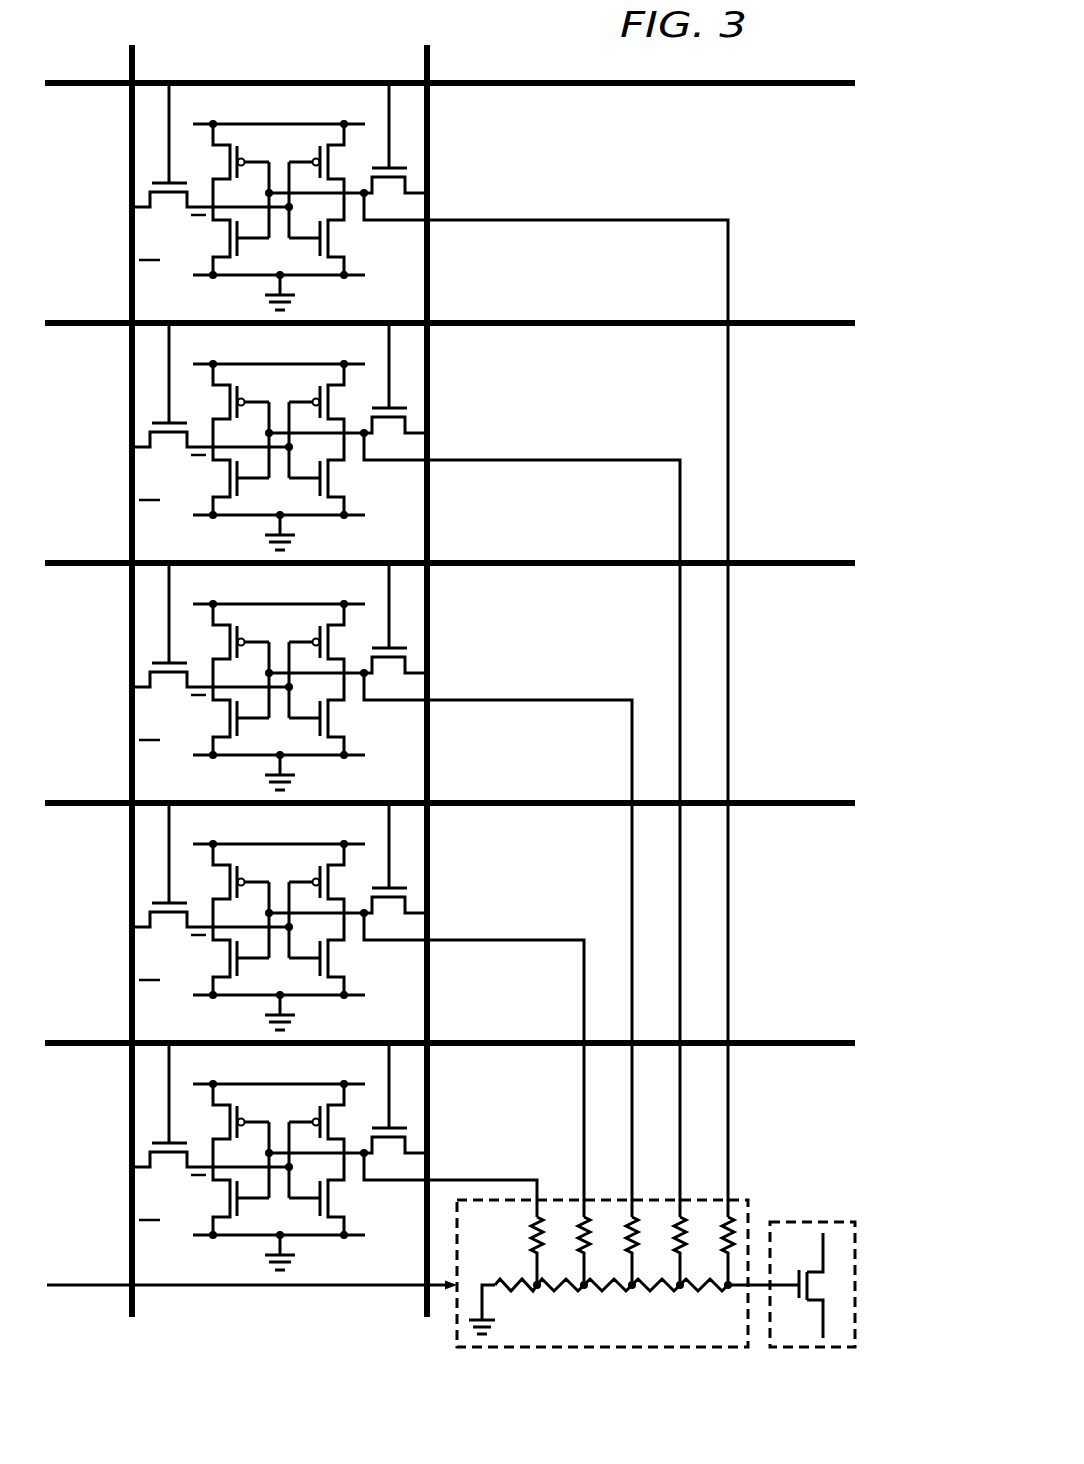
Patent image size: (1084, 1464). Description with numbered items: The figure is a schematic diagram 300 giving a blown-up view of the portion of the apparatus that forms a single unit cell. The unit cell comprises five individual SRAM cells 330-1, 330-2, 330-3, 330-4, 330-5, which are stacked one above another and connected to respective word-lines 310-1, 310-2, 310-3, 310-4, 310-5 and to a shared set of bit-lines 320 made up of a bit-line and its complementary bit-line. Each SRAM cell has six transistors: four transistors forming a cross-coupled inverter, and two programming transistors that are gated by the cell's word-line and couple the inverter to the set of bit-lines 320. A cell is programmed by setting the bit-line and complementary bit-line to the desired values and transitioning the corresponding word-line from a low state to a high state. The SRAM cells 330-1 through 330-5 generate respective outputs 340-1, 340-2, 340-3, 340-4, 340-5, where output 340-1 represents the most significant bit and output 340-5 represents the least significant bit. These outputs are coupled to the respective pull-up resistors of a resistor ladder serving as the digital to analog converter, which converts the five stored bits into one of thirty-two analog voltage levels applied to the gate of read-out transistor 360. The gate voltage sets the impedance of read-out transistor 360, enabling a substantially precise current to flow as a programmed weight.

The schematic diagram 300 is at (702, 71).
The word-line 310-1 is at (77, 88).
The word-line 310-2 is at (450, 336).
The word-line 310-3 is at (450, 576).
The word-line 310-4 is at (450, 816).
The word-line 310-5 is at (450, 1056).
The set of bit-lines 320 is at (445, 1337).
The SRAM cell 330-1 is at (128, 88).
The SRAM cell 330-2 is at (237, 440).
The SRAM cell 330-3 is at (237, 680).
The SRAM cell 330-4 is at (237, 920).
The SRAM cell 330-5 is at (237, 1160).
The output 340-1 is at (472, 216).
The output 340-2 is at (553, 813).
The output 340-3 is at (529, 933).
The output 340-4 is at (505, 1053).
The output 340-5 is at (482, 1158).
The read-out transistor 360 is at (807, 1222).